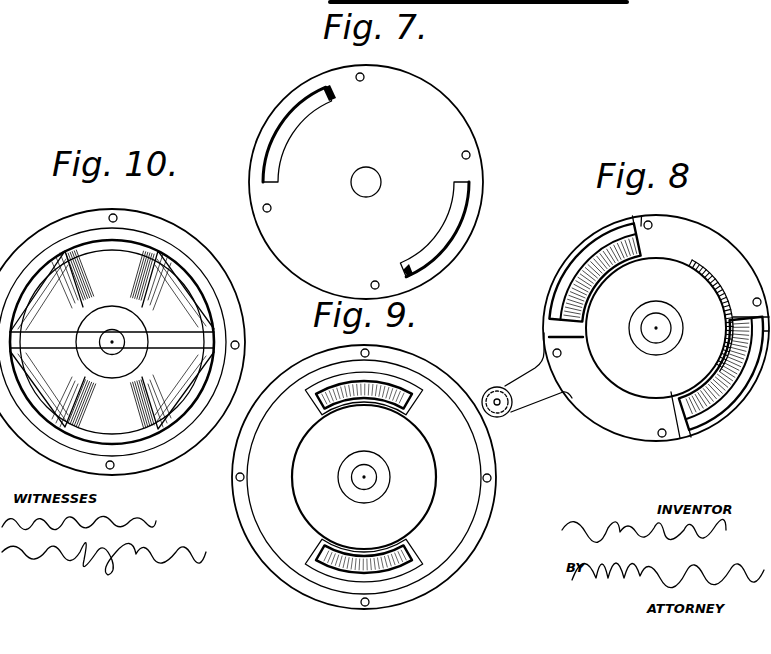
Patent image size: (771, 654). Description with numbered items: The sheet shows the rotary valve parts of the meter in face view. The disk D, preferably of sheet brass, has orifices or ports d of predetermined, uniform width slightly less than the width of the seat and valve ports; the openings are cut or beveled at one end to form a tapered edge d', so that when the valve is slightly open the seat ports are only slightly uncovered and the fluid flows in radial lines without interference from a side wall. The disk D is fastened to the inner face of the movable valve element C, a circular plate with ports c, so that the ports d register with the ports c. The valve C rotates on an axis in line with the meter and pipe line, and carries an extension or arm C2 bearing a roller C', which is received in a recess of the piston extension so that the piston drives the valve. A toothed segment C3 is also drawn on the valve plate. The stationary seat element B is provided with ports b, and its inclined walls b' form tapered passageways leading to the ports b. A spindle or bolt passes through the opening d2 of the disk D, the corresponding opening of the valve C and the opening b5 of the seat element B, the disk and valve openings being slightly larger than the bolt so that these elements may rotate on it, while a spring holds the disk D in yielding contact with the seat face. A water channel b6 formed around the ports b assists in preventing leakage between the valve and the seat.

In FIG. 7, the disk D is at (453, 125).
In FIG. 7, the ports d is at (380, 182).
In FIG. 7, the tapered edge d' is at (370, 181).
In FIG. 7, the opening d2 is at (364, 167).
In FIG. 8, the movable element C is at (656, 315).
In FIG. 8, the ports c is at (580, 268).
In FIG. 8, the roller C' is at (506, 419).
In FIG. 8, the extension or arm C2 is at (655, 318).
In FIG. 8, the gear teeth segment C3 is at (720, 301).
In FIG. 9, the stationary seat element B is at (262, 527).
In FIG. 10, the stationary seat element B is at (122, 336).
In FIG. 9, the ports b is at (350, 453).
In FIG. 10, the ports b is at (112, 349).
In FIG. 10, the inclined walls b' is at (112, 339).
In FIG. 9, the opening b5 is at (364, 472).
In FIG. 10, the opening b5 is at (108, 338).
In FIG. 9, the water channel b6 is at (415, 378).